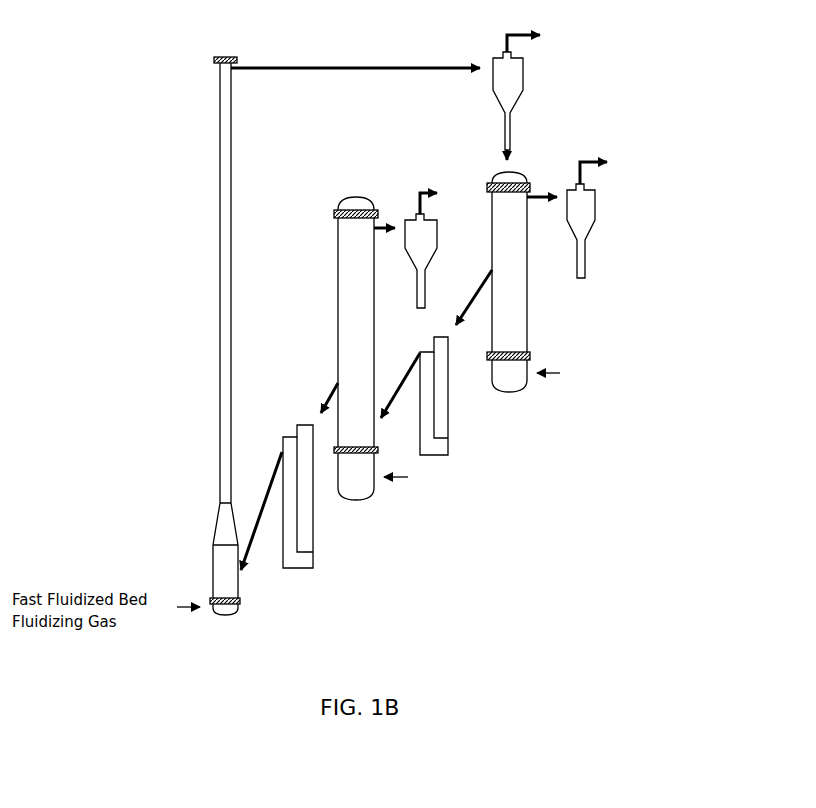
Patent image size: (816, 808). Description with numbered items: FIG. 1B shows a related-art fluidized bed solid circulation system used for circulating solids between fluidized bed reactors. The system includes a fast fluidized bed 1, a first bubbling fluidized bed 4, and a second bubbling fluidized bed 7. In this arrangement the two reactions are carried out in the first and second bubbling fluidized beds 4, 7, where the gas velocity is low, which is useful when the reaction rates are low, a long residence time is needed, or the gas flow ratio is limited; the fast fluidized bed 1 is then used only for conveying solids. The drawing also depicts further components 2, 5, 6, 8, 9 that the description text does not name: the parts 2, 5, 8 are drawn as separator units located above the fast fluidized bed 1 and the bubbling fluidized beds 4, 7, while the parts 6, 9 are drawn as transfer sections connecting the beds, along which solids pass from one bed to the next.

The fast fluidized bed 1 is at (220, 218).
The cyclone separator 2 is at (490, 56).
The first bubbling fluidized bed 4 is at (527, 260).
The cyclone separator 5 is at (598, 200).
The loop seal 6 is at (448, 418).
The second bubbling fluidized bed 7 is at (338, 275).
The cyclone separator 8 is at (414, 216).
The loop seal 9 is at (283, 434).